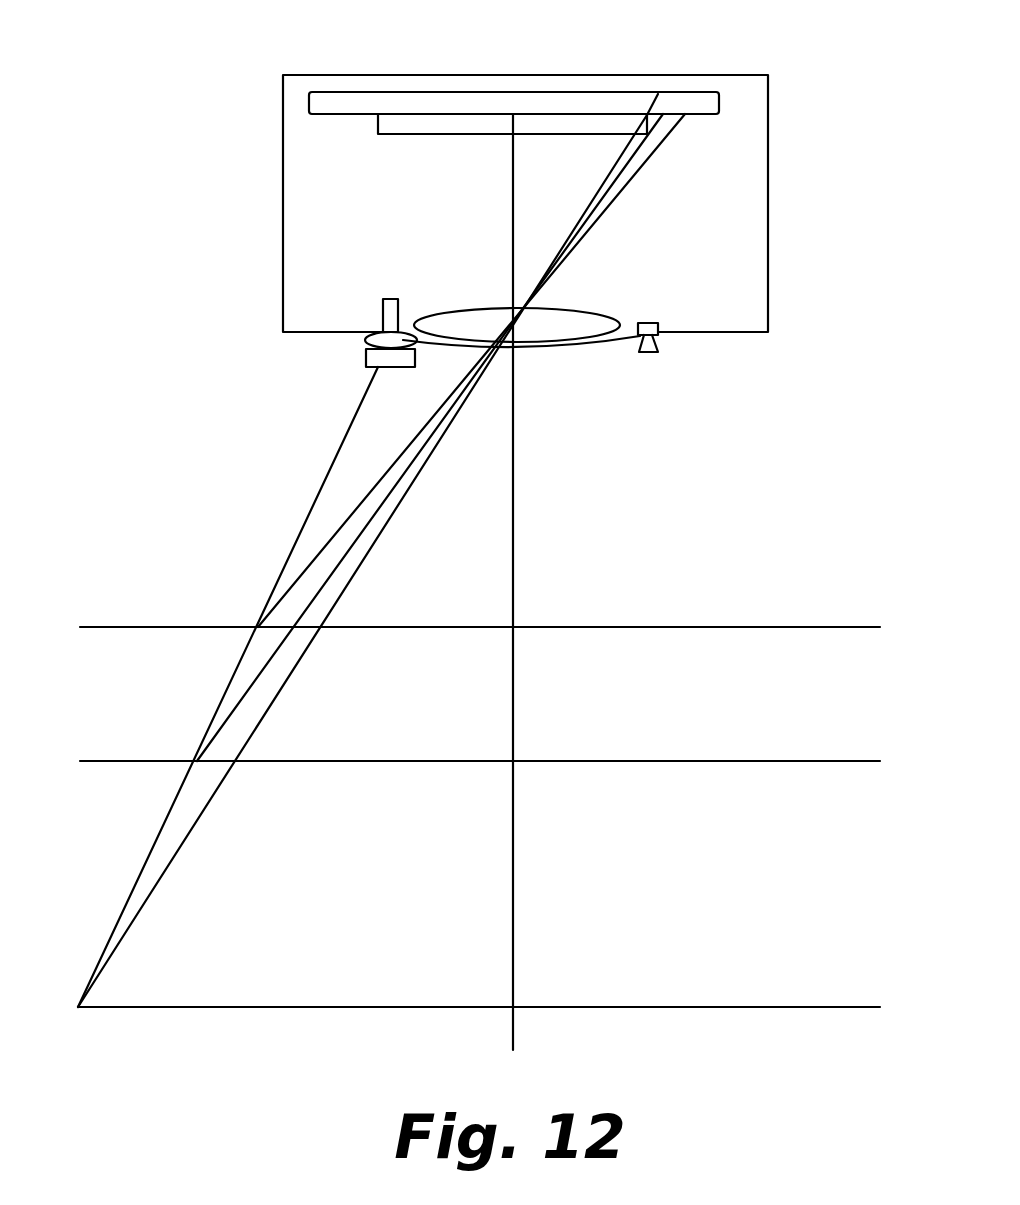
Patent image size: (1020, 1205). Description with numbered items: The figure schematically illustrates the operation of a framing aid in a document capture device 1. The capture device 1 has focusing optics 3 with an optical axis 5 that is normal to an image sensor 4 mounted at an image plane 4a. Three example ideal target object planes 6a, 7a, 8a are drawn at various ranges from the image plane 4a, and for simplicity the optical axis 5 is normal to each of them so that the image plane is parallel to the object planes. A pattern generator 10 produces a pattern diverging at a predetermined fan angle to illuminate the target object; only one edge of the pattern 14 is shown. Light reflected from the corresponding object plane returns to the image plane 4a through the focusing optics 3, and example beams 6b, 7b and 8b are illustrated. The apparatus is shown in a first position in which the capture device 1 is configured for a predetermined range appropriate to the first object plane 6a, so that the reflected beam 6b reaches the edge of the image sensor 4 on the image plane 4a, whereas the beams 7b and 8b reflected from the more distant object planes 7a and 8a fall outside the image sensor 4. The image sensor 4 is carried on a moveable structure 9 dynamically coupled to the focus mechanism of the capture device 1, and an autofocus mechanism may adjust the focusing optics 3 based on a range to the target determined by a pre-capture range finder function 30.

The document capture device 1 is at (768, 243).
The focusing optics 3 is at (583, 330).
The image sensor 4 is at (408, 135).
The image plane 4a is at (347, 113).
The optical axis 5 is at (515, 530).
The first object plane 6a is at (730, 625).
The reflected beam 6b is at (357, 508).
The object plane 7a is at (733, 760).
The reflected beam 7b is at (232, 718).
The object plane 8a is at (720, 1005).
The reflected beam 8b is at (203, 792).
The moveable structure 9 is at (660, 92).
The pattern generator 10 is at (365, 350).
The edge of the pattern 14 is at (331, 468).
The pre-capture range finder function 30 is at (655, 353).